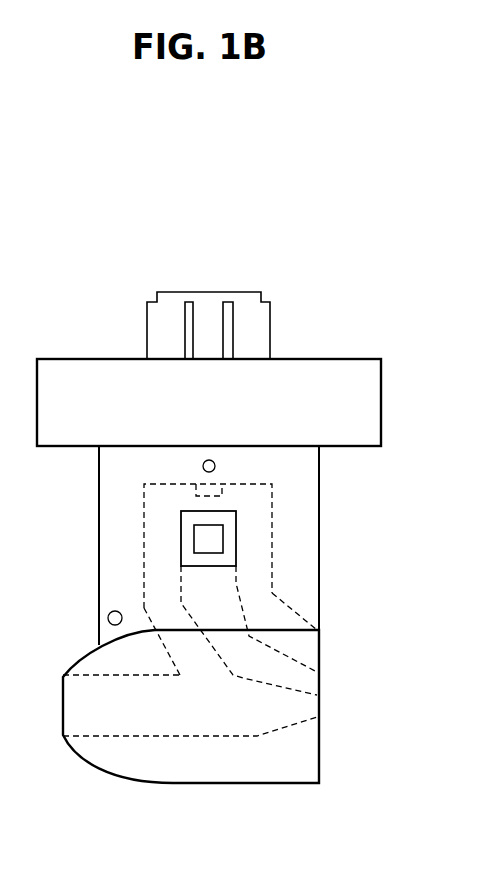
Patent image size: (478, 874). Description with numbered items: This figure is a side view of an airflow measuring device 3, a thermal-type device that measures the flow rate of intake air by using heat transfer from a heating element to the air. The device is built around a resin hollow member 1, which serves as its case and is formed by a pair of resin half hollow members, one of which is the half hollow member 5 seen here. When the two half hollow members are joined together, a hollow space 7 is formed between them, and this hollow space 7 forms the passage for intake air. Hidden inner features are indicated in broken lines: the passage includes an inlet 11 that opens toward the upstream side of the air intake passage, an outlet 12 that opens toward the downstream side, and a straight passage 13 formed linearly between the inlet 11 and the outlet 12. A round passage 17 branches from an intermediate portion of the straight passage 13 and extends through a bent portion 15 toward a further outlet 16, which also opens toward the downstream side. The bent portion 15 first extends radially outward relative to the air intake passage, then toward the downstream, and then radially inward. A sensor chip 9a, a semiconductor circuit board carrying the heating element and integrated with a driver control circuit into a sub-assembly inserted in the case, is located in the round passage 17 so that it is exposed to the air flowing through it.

The airflow measuring device 3 is at (365, 275).
The resin hollow member 1 is at (92, 512).
The half hollow member 5 is at (112, 553).
The sensor chip 9a is at (225, 485).
The bent portion 15 is at (250, 506).
The round passage 17 is at (258, 546).
The hollow space 7 is at (185, 722).
The outlet 16 is at (319, 653).
The inlet 11 is at (63, 705).
The outlet 12 is at (319, 710).
The straight passage 13 is at (138, 715).